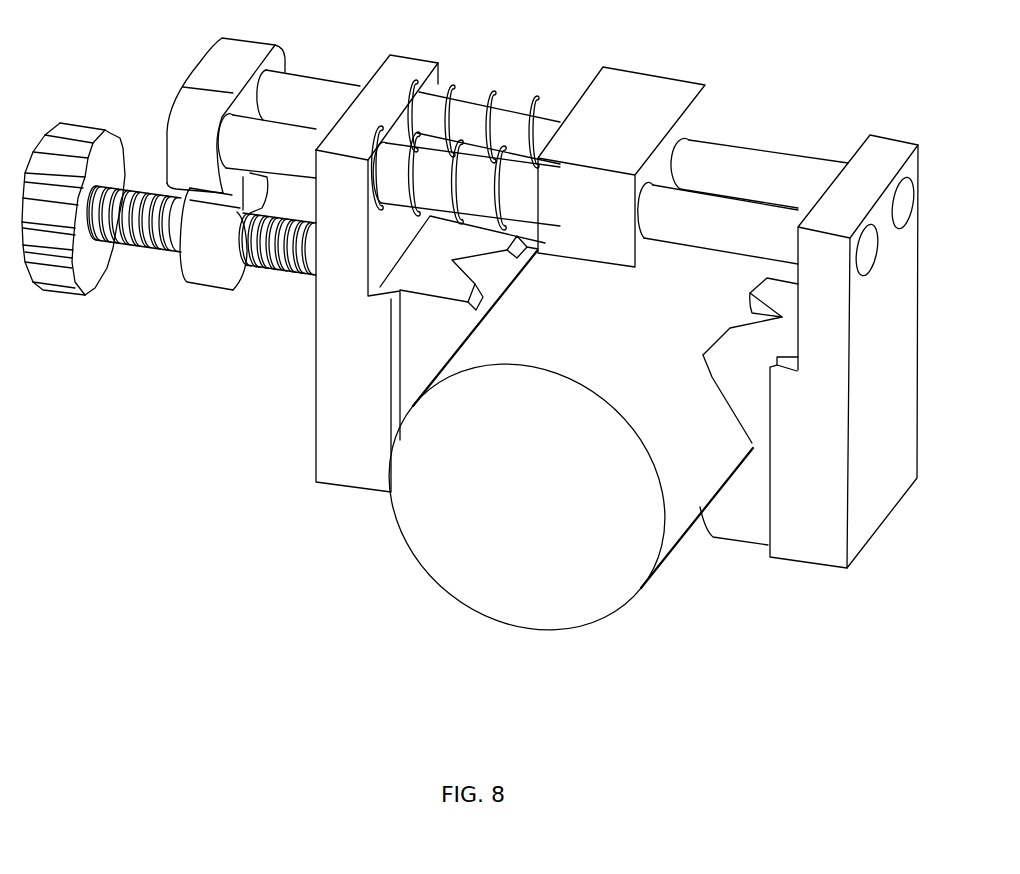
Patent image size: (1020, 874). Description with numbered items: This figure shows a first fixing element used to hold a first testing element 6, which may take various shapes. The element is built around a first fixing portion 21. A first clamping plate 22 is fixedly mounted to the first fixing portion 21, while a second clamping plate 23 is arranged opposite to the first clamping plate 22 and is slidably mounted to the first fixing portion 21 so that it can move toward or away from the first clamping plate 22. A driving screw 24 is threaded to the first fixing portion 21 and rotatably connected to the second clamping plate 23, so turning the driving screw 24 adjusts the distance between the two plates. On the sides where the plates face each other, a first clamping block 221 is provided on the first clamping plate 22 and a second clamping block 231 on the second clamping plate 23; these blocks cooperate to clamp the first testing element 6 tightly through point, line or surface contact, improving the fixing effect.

The first testing element 6 is at (487, 560).
The first fixing portion 21 is at (625, 118).
The first clamping plate 22 is at (348, 445).
The first clamping block 221 is at (421, 362).
The second clamping plate 23 is at (818, 475).
The second clamping block 231 is at (748, 467).
The driving screw 24 is at (126, 192).